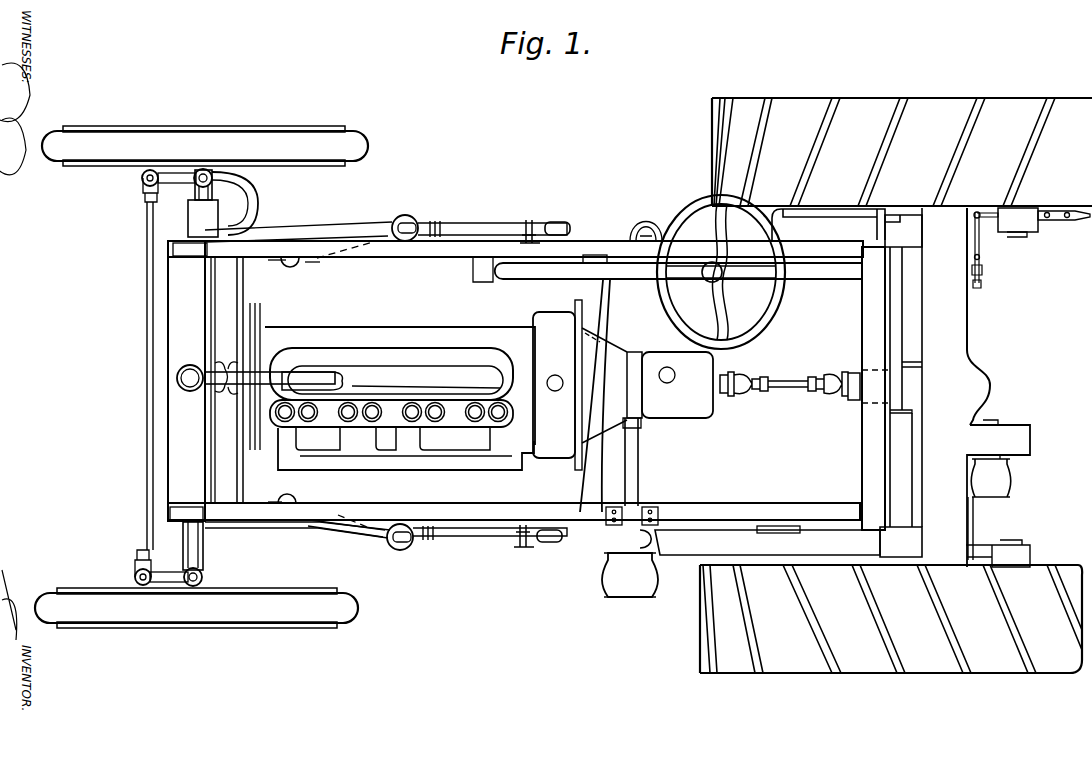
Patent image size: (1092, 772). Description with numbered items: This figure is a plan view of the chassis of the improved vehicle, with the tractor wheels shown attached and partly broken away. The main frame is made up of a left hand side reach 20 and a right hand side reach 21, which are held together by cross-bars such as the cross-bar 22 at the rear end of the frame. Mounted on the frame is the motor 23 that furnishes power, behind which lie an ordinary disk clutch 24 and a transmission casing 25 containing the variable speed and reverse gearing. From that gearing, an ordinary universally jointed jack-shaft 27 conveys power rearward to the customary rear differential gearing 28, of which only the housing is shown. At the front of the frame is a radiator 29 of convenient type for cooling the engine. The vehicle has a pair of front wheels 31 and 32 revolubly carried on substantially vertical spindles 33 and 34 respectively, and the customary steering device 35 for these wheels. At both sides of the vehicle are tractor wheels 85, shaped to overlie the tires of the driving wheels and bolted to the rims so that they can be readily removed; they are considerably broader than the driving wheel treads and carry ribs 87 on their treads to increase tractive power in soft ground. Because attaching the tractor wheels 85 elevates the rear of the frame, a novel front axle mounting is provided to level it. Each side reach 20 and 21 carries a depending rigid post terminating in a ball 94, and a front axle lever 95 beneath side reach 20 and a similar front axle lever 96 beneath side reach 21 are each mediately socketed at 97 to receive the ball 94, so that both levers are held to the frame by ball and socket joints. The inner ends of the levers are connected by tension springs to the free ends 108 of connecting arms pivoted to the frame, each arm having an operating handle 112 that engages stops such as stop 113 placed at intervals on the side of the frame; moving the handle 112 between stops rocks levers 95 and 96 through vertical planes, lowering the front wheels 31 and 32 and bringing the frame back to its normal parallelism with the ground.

The left hand side reach 20 is at (479, 511).
The right hand side reach 21 is at (514, 265).
The cross-bar 22 is at (870, 452).
The motor 23 is at (385, 352).
The disk clutch 24 is at (558, 445).
The transmission casing 25 is at (702, 418).
The universally jointed jack-shaft 27 is at (785, 382).
The rear differential gearing 28 is at (978, 378).
The radiator 29 is at (185, 432).
The front wheel 31 is at (312, 612).
The front wheel 32 is at (312, 148).
The spindle 33 is at (203, 577).
The spindle 34 is at (207, 170).
The steering device 35 is at (692, 212).
The tractor wheels 85 is at (896, 385).
The ribs 87 is at (965, 110).
The ball 94 is at (296, 266).
The front axle lever 95 is at (316, 500).
The front axle lever 96 is at (316, 264).
The socket 97 is at (283, 262).
The free end of connecting arm 108 is at (410, 215).
The operating handle 112 is at (560, 224).
The stop 113 is at (530, 222).